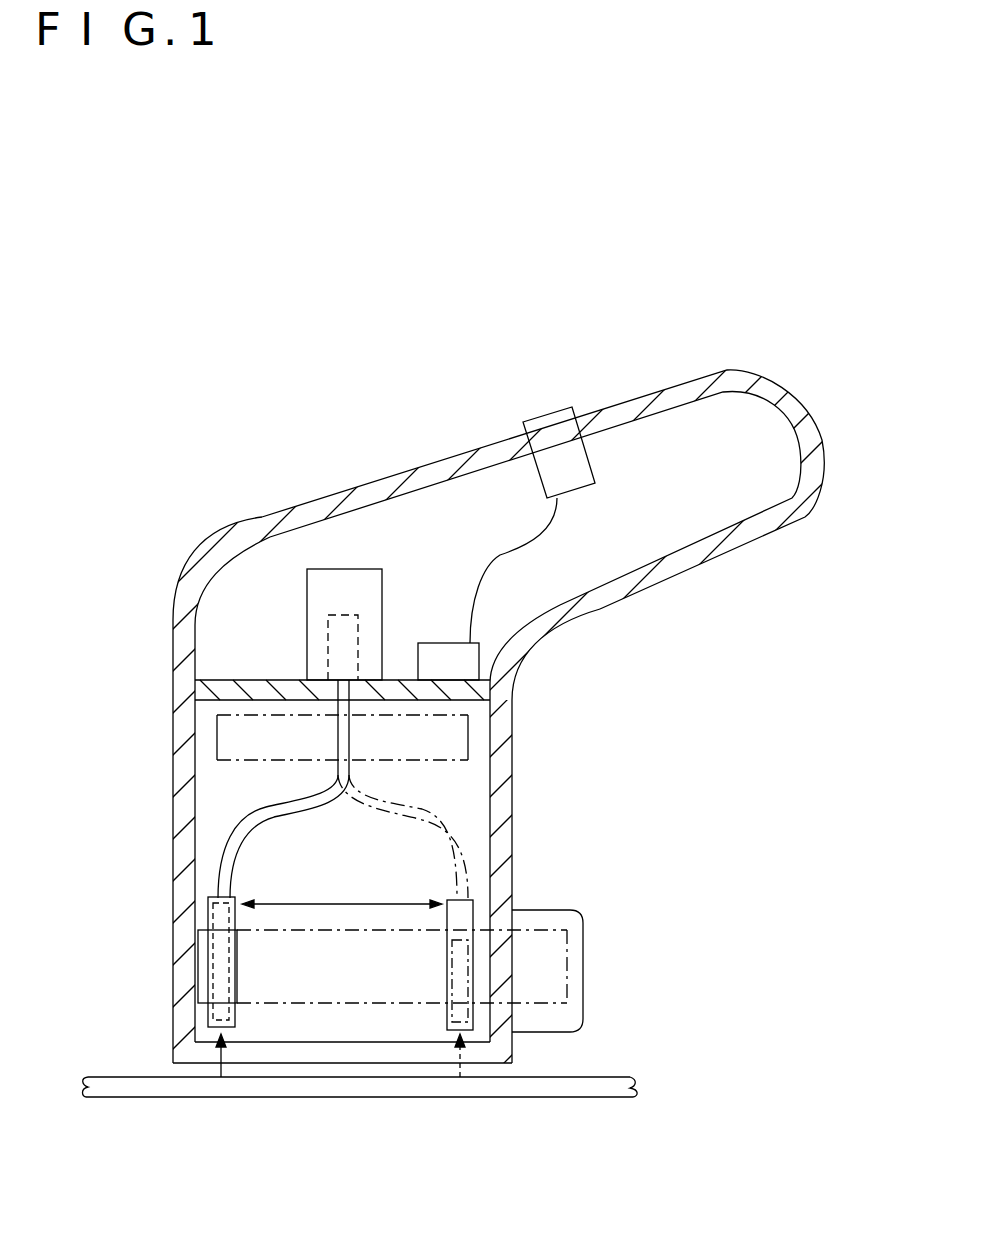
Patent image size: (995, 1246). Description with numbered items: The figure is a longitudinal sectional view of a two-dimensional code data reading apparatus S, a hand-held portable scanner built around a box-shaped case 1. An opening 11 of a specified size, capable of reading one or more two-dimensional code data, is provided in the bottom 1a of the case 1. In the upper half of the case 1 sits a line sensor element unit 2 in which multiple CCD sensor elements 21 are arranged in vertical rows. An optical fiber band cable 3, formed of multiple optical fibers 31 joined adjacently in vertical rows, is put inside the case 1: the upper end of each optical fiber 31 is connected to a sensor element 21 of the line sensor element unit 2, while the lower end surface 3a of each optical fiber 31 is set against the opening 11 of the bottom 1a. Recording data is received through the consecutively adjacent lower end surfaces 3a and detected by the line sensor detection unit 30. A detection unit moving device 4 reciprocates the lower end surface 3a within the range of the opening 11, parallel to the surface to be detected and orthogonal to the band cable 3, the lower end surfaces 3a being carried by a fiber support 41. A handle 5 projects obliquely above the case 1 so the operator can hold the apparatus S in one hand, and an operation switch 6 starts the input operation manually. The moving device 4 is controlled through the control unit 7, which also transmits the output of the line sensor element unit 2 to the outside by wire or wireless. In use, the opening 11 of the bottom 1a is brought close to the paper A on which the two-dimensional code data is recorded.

The case 1 is at (173, 770).
The bottom 1a is at (283, 1065).
The opening 11 is at (377, 1058).
The line sensor element unit 2 is at (304, 587).
The sensor elements 21 is at (328, 648).
The optical fiber band cable 3 is at (222, 845).
The lower end surface 3a is at (222, 1015).
The optical fibers 31 is at (218, 918).
The line sensor detection unit 30 is at (434, 1044).
The detection unit moving device 4 is at (550, 933).
The fiber support 41 is at (567, 993).
The handle 5 is at (655, 392).
The operation switch 6 is at (547, 420).
The control unit 7 is at (478, 662).
The two-dimensional code data reading apparatus S is at (350, 495).
The paper A is at (618, 1078).